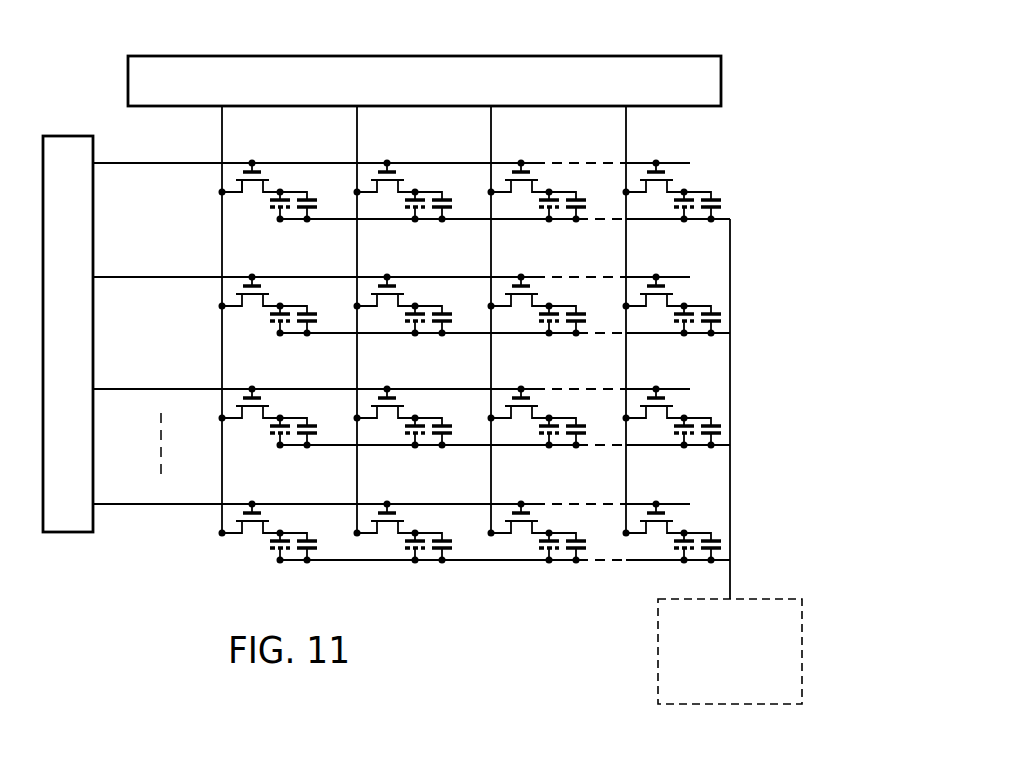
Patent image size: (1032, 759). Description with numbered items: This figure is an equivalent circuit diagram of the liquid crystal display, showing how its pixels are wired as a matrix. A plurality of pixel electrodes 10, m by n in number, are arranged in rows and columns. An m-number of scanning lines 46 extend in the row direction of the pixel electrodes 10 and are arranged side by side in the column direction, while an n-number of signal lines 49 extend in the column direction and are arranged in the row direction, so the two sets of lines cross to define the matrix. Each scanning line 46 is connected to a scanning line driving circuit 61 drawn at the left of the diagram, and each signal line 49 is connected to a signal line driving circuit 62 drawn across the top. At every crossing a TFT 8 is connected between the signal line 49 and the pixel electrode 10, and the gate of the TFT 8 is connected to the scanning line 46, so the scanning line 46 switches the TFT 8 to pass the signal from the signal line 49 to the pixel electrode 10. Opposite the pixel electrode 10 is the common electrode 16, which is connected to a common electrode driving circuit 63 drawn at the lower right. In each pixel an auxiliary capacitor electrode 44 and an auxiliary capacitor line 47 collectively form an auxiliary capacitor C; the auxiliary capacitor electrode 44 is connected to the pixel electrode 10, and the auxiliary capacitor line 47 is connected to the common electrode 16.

The TFT 8 is at (267, 178).
The pixel electrode 10 is at (264, 200).
The common electrode 16 is at (272, 214).
The auxiliary capacitor C is at (314, 206).
The auxiliary capacitor electrode 44 is at (340, 300).
The scanning line 46 is at (161, 166).
The auxiliary capacitor line 47 is at (316, 324).
The signal line 49 is at (221, 135).
The scanning line driving circuit 61 is at (68, 534).
The signal line driving circuit 62 is at (722, 80).
The common electrode driving circuit 63 is at (655, 657).